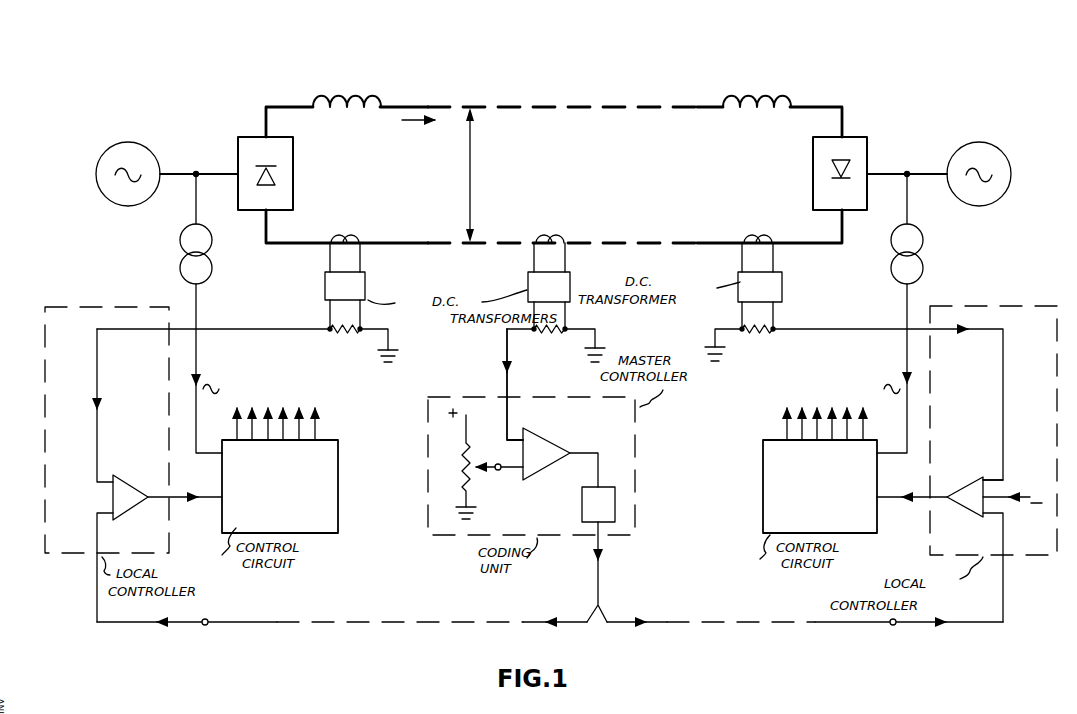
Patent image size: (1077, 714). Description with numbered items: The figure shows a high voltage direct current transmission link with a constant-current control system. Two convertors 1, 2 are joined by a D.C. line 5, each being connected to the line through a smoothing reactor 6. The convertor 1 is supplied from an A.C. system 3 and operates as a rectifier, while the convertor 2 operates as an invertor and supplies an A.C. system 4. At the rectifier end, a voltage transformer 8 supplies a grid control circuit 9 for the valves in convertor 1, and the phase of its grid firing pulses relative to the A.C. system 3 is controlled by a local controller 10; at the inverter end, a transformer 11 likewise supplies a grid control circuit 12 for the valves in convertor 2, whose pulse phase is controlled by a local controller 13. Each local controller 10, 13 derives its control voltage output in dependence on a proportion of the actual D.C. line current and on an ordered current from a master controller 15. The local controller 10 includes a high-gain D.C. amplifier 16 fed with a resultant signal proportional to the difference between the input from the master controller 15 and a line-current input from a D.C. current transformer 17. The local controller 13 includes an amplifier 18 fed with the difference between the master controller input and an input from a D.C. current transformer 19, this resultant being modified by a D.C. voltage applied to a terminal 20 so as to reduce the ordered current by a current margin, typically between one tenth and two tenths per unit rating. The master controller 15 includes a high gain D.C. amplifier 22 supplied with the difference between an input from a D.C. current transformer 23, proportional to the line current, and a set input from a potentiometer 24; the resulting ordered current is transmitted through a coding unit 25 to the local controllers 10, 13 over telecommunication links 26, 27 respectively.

The convertor 1 is at (312, 184).
The convertor 2 is at (800, 184).
The A.C. system 3 is at (88, 184).
The A.C. system 4 is at (1026, 184).
The D.C. line 5 is at (600, 106).
The smoothing reactor 6 is at (353, 91).
The voltage transformer 8 is at (226, 263).
The grid control circuit 9 is at (282, 492).
The local controller 10 is at (80, 302).
The transformer 11 is at (948, 263).
The grid control circuit 12 is at (832, 492).
The local controller 13 is at (1037, 302).
The master controller 15 is at (636, 434).
The high-gain D.C. amplifier 16 is at (148, 481).
The D.C. current transformer 17 is at (363, 287).
The amplifier 18 is at (965, 480).
The D.C. current transformer 19 is at (780, 287).
The terminal 20 is at (1025, 494).
The high gain D.C. amplifier 22 is at (576, 445).
The D.C. current transformer 23 is at (567, 288).
The potentiometer 24 is at (480, 481).
The coding unit 25 is at (607, 514).
The telecommunication link 26 is at (352, 621).
The telecommunication link 27 is at (731, 621).